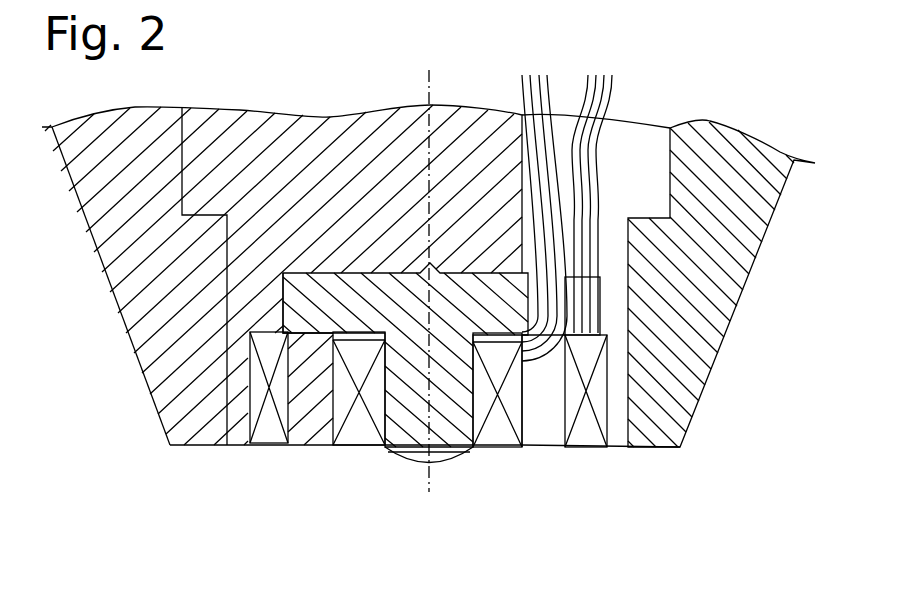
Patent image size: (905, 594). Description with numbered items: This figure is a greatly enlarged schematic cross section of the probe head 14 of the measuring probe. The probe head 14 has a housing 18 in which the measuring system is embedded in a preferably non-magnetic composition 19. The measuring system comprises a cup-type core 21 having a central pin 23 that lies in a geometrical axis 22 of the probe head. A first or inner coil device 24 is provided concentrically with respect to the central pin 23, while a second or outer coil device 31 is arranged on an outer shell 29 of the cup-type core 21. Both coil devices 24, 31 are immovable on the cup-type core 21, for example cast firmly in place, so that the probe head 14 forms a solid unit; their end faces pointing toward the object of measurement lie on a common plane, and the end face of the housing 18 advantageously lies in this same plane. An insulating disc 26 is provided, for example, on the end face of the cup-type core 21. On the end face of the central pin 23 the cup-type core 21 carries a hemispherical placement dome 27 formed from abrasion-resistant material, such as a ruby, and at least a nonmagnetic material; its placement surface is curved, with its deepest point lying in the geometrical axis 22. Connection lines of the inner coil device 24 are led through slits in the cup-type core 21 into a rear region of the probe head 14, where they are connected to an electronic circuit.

The probe head 14 is at (172, 462).
The housing 18 is at (705, 316).
The non-magnetic composition 19 is at (318, 133).
The cup-type core 21 is at (330, 258).
The geometrical axis 22 is at (429, 478).
The central pin 23 is at (402, 408).
The inner coil device 24 is at (497, 425).
The insulating disc 26 is at (323, 407).
The hemispherical placement dome 27 is at (413, 452).
The outer shell 29 is at (285, 290).
The outer coil device 31 is at (585, 427).